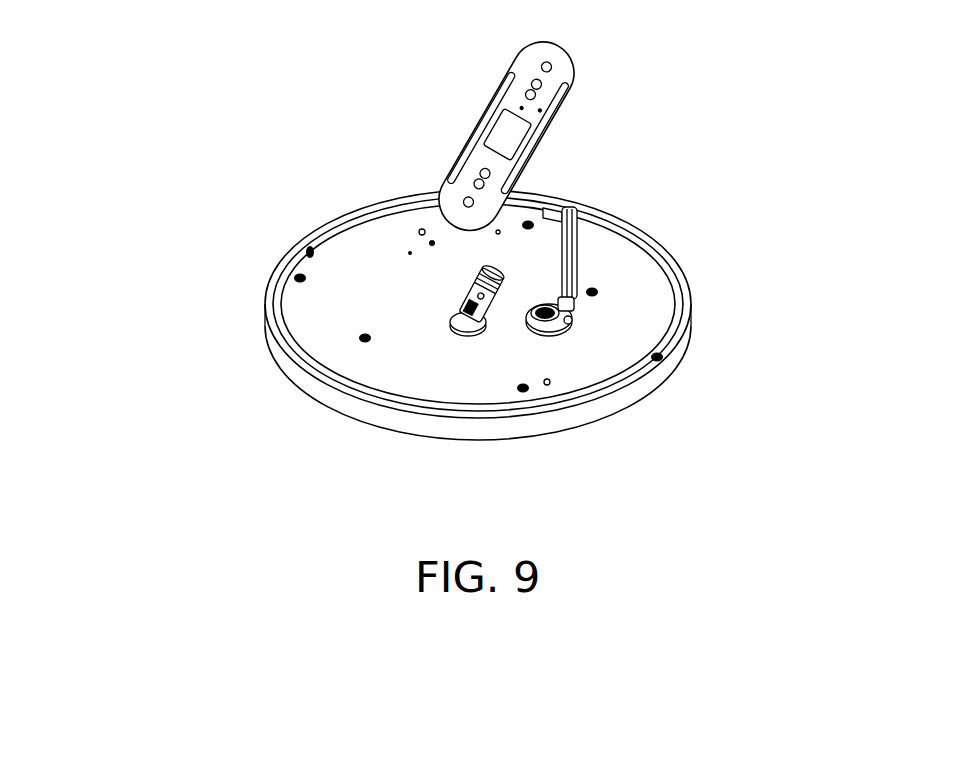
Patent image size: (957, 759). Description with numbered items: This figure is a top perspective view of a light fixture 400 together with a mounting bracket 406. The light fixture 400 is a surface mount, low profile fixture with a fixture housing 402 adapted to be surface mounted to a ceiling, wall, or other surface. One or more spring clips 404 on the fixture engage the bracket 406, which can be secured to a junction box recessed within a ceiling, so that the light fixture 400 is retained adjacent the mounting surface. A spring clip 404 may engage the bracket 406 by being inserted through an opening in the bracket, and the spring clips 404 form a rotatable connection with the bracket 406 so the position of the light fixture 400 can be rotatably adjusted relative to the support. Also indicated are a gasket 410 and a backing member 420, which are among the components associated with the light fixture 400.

The light fixture 400 is at (159, 211).
The fixture housing 402 is at (262, 346).
The spring clip 404 is at (487, 327).
The bracket 406 is at (593, 64).
The gasket 410 is at (334, 203).
The backing member 420 is at (647, 297).